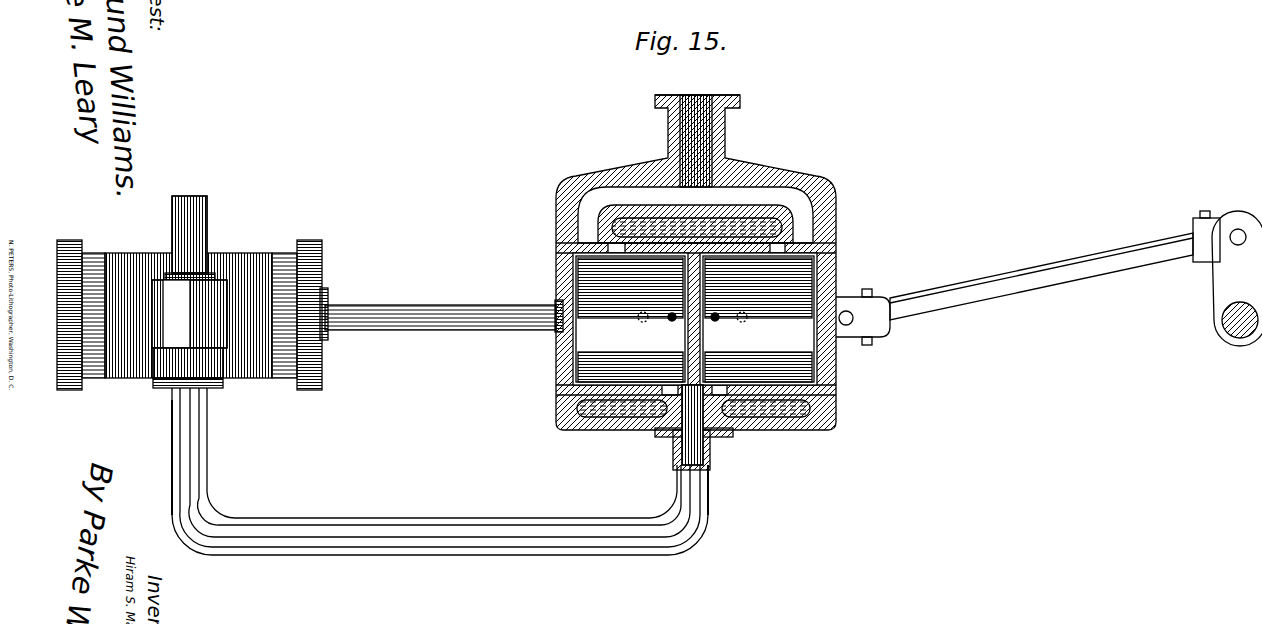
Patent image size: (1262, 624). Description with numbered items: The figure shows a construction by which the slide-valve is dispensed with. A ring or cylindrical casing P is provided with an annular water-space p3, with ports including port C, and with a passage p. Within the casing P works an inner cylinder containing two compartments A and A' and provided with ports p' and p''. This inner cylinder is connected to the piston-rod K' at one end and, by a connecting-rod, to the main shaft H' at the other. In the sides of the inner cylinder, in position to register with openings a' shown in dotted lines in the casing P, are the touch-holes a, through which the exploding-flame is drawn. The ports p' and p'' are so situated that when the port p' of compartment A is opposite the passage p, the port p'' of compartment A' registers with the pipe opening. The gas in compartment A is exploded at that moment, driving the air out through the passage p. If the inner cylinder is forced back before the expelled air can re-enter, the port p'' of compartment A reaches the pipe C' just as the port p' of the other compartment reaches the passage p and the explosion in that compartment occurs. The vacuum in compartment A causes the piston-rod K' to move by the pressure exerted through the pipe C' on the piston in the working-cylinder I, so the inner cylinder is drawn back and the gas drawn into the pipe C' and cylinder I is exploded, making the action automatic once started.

The port C is at (697, 130).
The ring or cylindrical casing P is at (706, 262).
The passage p is at (703, 215).
The port p' is at (695, 288).
The port p'' is at (695, 368).
The annular water-space p3 is at (780, 418).
The compartment A is at (630, 319).
The compartment A' is at (758, 319).
The touch-hole a is at (693, 325).
The opening a' is at (692, 323).
The pipe C' is at (688, 427).
The working-cylinder I is at (189, 293).
The piston-rod K' is at (441, 309).
The main shaft H' is at (1237, 278).